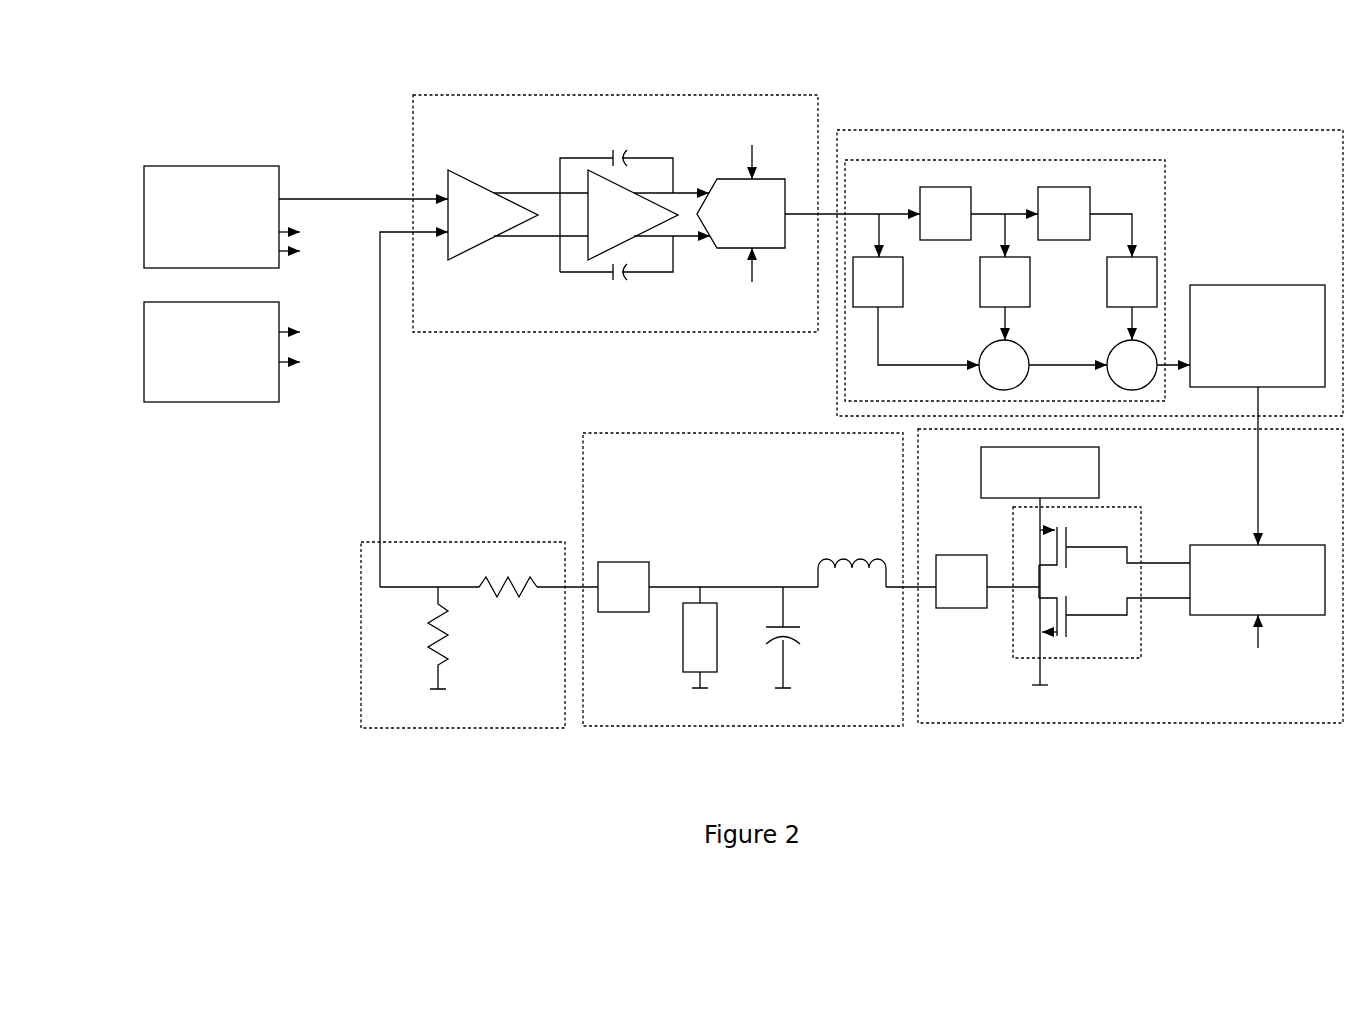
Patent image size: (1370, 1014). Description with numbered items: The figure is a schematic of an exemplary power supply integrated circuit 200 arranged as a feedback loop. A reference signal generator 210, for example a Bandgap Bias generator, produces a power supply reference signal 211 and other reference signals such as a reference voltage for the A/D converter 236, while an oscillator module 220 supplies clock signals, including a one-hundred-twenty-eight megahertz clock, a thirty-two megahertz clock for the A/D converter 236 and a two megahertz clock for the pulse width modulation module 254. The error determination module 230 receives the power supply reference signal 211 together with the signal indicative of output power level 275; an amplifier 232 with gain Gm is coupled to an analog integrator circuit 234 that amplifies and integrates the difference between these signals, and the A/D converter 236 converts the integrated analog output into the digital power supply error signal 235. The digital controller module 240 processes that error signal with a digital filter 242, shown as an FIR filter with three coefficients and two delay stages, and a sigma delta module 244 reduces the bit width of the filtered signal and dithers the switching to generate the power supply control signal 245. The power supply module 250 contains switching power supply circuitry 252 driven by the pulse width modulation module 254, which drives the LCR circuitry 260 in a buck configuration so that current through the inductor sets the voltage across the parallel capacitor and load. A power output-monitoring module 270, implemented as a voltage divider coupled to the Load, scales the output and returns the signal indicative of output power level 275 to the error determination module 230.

The power supply integrated circuit 200 is at (220, 70).
The reference signal generator 210 is at (214, 166).
The power supply reference signal 211 is at (345, 199).
The oscillator module 220 is at (205, 402).
The error determination module 230 is at (614, 95).
The amplifier 232 is at (478, 180).
The analog integrator circuit 234 is at (582, 230).
The power supply error signal 235 is at (808, 205).
The A/D converter 236 is at (714, 178).
The digital controller module 240 is at (1102, 130).
The digital filter 242 is at (1165, 197).
The sigma delta module 244 is at (1262, 285).
The power supply control signal 245 is at (1262, 410).
The power supply module 250 is at (1115, 723).
The switching power supply circuitry 252 is at (1141, 521).
The pulse width modulation module 254 is at (1308, 545).
The LCR circuitry 260 is at (687, 433).
The power output-monitoring module 270 is at (476, 542).
The signal indicative of output power level 275 is at (380, 478).